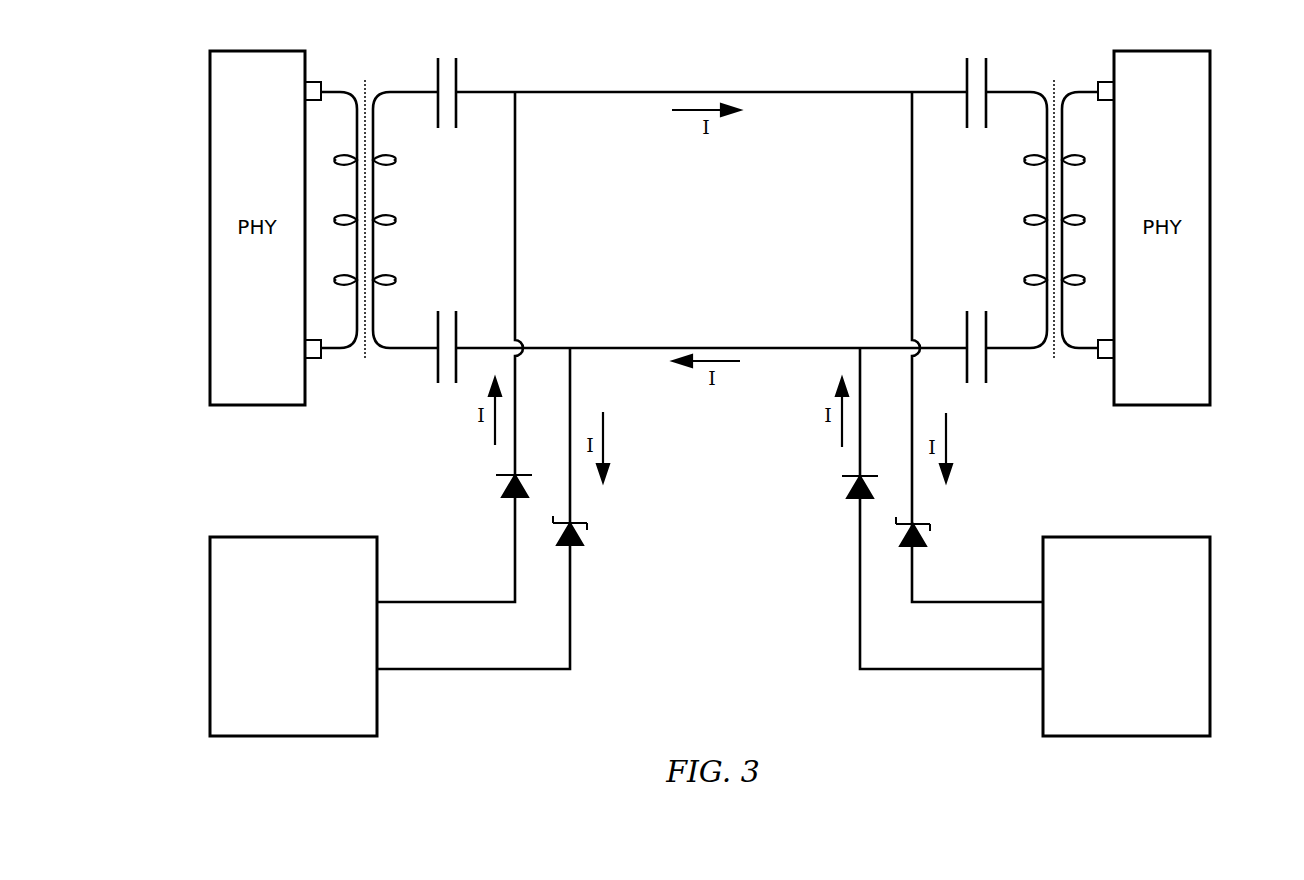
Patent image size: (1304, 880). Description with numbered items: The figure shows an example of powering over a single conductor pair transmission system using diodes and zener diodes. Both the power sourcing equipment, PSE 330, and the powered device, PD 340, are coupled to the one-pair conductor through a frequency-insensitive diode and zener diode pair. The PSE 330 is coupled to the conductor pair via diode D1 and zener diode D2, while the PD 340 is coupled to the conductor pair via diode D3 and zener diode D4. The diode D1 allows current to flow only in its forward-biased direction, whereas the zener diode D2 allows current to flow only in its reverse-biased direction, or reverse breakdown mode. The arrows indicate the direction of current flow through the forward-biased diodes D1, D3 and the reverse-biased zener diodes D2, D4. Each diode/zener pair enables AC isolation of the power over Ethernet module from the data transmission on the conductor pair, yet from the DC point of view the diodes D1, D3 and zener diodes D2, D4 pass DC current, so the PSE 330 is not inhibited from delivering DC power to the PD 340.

The PSE 330 is at (210, 620).
The PD 340 is at (1210, 620).
The diode D1 is at (500, 480).
The zener diode D2 is at (585, 529).
The diode D3 is at (846, 481).
The zener diode D4 is at (928, 530).